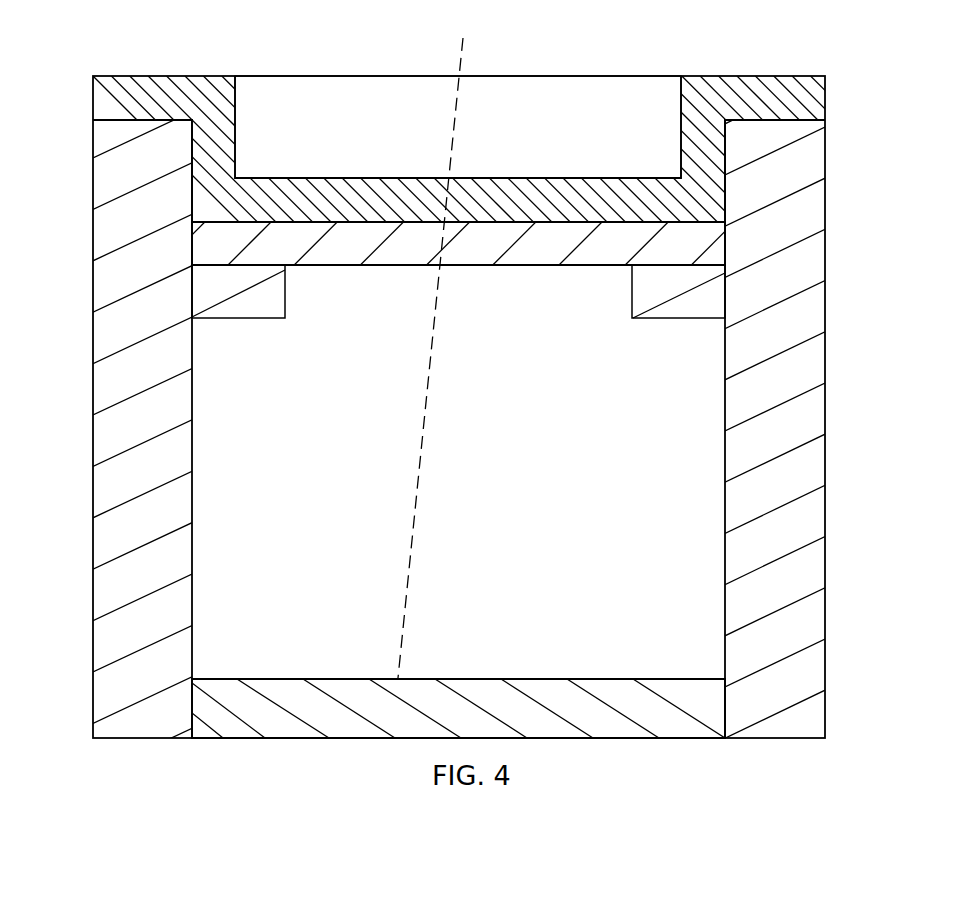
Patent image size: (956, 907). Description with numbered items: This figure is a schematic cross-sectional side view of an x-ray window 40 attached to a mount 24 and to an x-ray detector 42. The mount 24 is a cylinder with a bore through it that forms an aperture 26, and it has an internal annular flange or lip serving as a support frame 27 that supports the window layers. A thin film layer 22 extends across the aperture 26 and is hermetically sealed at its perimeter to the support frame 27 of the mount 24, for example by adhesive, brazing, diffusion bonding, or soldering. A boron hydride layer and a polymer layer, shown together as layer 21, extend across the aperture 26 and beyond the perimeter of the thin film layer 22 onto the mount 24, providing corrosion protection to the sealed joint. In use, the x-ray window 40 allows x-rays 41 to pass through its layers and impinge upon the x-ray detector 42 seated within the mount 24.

The x-ray window 40 is at (132, 43).
The aperture 26 is at (376, 70).
The layer 21 is at (328, 177).
The x-rays 41 is at (458, 117).
The thin film layer 22 is at (213, 242).
The support frame 27 is at (240, 292).
The mount 24 is at (172, 608).
The x-ray detector 42 is at (660, 724).